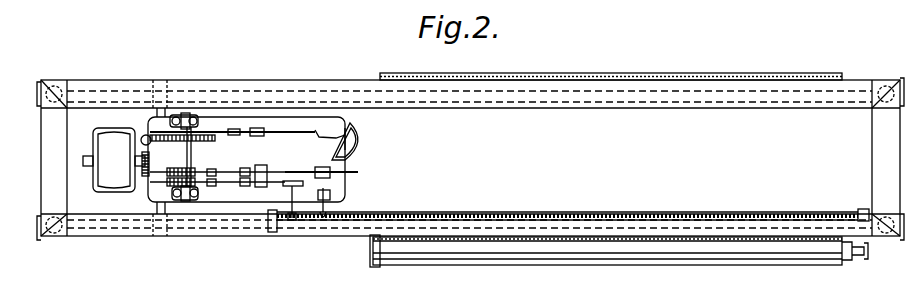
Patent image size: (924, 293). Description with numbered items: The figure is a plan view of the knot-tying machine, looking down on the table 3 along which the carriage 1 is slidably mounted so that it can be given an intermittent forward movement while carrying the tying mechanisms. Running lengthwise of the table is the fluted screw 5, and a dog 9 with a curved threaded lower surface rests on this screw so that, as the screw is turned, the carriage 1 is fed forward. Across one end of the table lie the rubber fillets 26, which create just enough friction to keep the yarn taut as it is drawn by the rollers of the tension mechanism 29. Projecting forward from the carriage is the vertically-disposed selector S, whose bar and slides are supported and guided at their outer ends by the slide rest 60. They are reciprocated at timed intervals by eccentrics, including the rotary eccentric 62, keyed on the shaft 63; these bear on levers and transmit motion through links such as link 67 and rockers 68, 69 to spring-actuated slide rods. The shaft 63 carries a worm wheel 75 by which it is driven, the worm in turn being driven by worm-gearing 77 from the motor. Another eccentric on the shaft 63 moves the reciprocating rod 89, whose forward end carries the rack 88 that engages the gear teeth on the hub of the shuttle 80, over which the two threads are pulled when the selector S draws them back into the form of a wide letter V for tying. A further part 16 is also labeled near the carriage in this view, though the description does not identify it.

The table 3 is at (461, 159).
The rubber fillets 26 is at (670, 68).
The fluted screw 5 is at (528, 211).
The carriage 1 is at (346, 198).
The worm-gearing 77 is at (141, 178).
The reciprocating rod 89 is at (271, 128).
The worm wheel 75 is at (199, 141).
The shaft 63 is at (190, 147).
The link 67 is at (201, 177).
The rocker 69 is at (233, 184).
The rotary eccentric 62 is at (170, 205).
The rocker 68 is at (262, 168).
The pin 16 is at (290, 190).
The dog 9 is at (322, 221).
The selector S is at (350, 173).
The slide rest 60 is at (319, 170).
The shuttle 80 is at (358, 140).
The rack 88 is at (340, 133).
The tension mechanism 29 is at (690, 256).